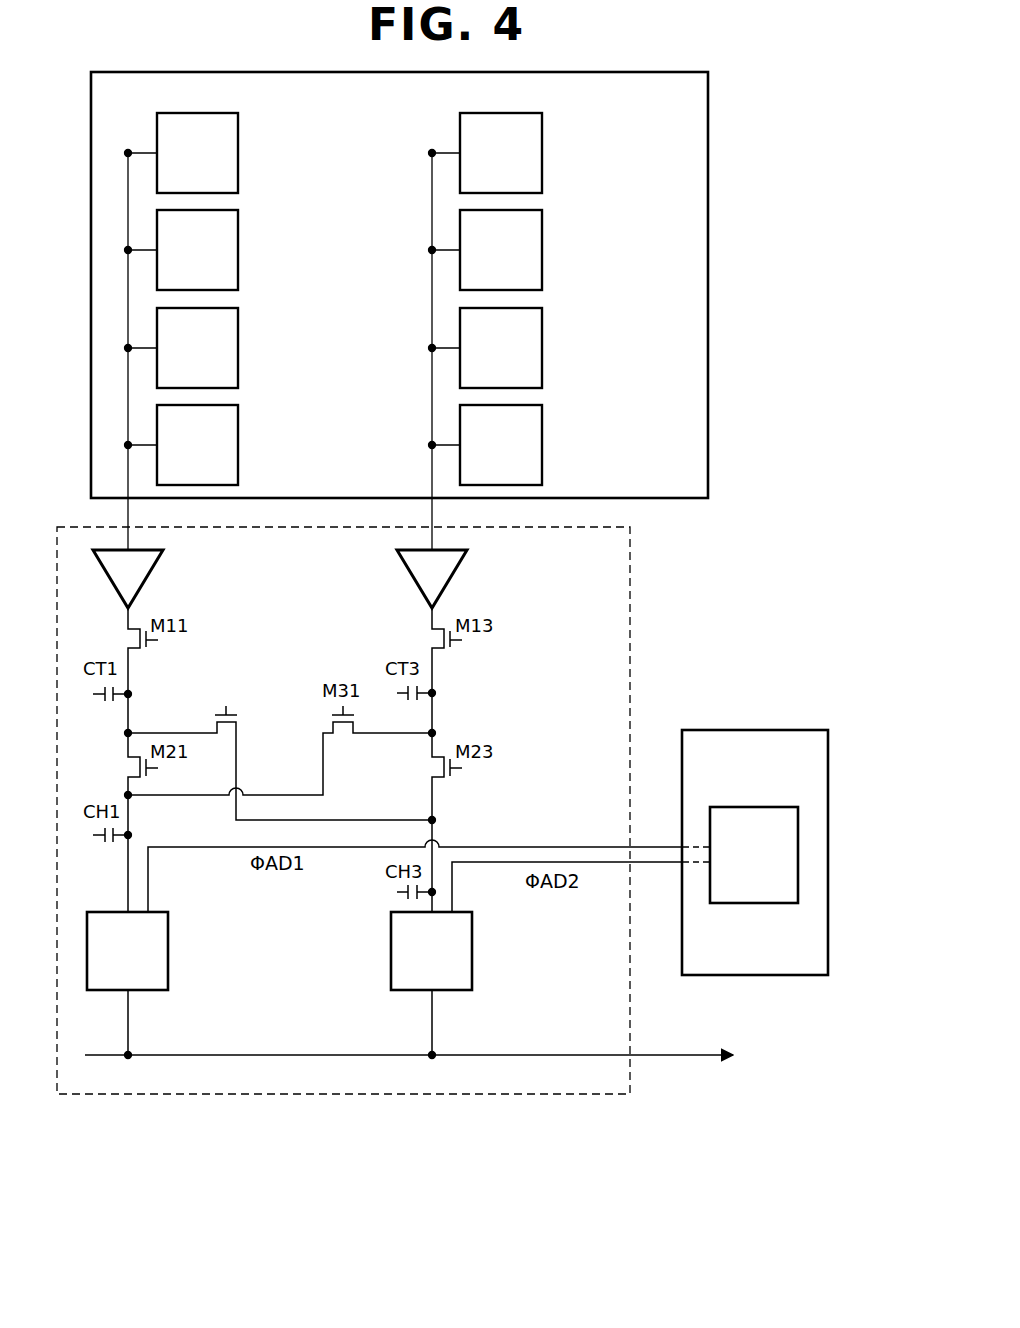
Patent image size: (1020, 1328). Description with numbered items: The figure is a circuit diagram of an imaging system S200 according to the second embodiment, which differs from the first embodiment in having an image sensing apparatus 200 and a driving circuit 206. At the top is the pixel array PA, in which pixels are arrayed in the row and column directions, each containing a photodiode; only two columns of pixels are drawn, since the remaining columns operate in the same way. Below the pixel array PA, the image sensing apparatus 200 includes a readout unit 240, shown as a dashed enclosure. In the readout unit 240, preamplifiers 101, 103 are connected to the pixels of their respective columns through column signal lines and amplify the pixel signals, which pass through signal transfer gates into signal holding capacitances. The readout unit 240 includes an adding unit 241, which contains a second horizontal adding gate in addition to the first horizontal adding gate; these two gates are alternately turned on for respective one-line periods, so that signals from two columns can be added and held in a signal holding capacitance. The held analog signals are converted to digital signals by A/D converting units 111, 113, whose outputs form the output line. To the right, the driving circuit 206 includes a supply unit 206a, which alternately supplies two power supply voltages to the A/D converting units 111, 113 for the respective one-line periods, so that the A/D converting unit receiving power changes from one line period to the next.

The pixel array PA is at (681, 518).
The preamplifier 101 is at (145, 582).
The preamplifier 103 is at (449, 582).
The A/D converting unit 111 is at (100, 990).
The A/D converting unit 113 is at (404, 990).
The image sensing apparatus 200 is at (443, 1111).
The imaging system S200 is at (516, 1186).
The driving circuit 206 is at (795, 730).
The supply unit 206a is at (750, 903).
The readout unit 240 is at (632, 662).
The adding unit 241 is at (235, 668).